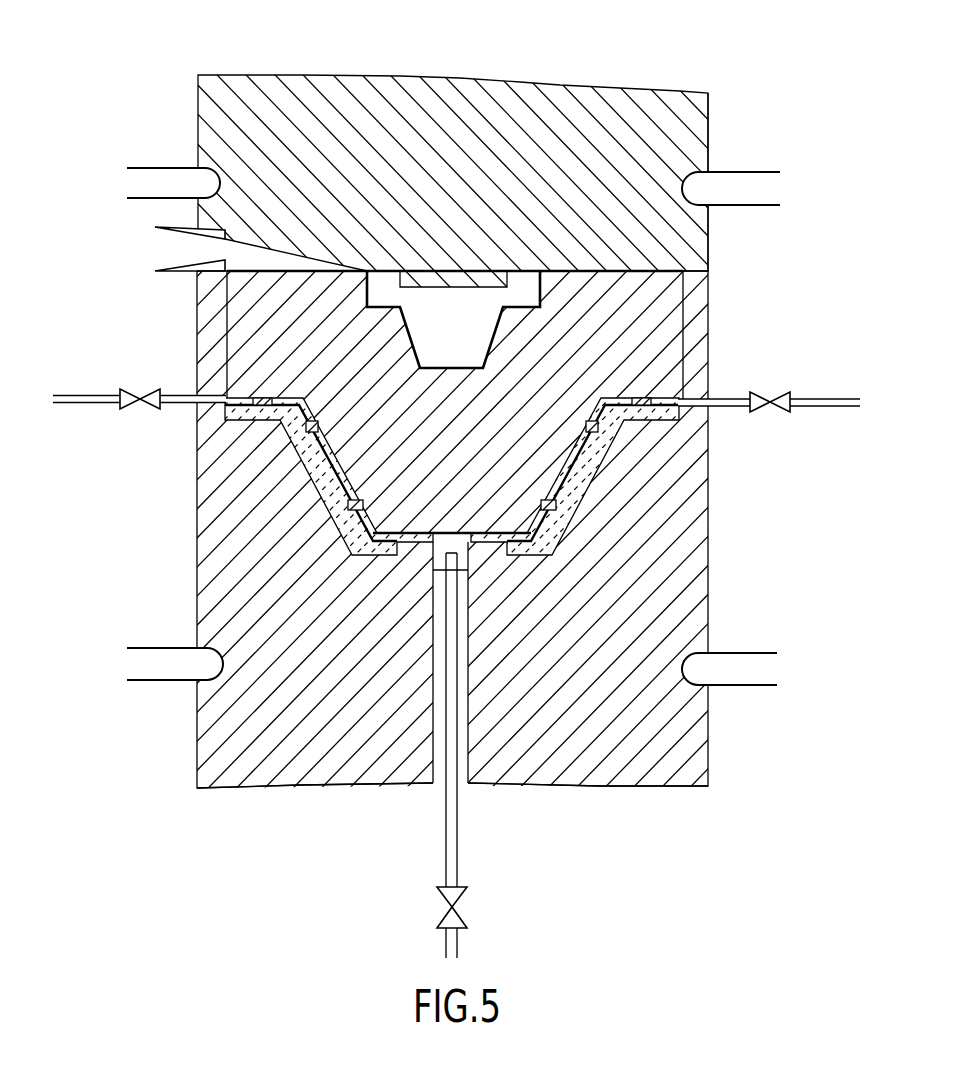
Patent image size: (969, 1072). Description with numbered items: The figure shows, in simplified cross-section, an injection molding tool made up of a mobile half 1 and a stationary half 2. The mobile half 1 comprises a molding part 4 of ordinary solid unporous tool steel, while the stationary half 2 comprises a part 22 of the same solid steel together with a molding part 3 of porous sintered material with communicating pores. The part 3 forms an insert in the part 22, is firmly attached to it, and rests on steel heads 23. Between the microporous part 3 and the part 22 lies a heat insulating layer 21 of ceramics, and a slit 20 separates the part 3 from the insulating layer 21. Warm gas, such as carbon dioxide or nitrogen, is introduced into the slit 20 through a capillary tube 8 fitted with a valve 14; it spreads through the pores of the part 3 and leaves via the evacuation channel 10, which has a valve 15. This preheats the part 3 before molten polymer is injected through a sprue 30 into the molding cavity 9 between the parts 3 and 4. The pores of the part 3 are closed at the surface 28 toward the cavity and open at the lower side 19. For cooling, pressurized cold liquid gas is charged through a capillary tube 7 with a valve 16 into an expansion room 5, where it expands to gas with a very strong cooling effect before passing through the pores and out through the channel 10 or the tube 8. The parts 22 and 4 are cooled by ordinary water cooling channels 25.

The mobile half 1 is at (710, 96).
The stationary half 2 is at (710, 557).
The molding part 3 is at (657, 312).
The molding part 4 is at (553, 120).
The expansion room 5 is at (438, 553).
The capillary tube 7 is at (453, 827).
The capillary tube 8 is at (838, 410).
The molding cavity 9 is at (448, 325).
The evacuation channel 10 is at (88, 408).
The valve 14 is at (770, 400).
The valve 15 is at (140, 398).
The valve 16 is at (460, 907).
The lower side 19 is at (357, 527).
The slit 20 is at (323, 447).
The heat insulating layer 21 is at (597, 470).
The part 22 is at (668, 737).
The steel heads 23 is at (323, 503).
The water cooling channels 25 is at (155, 181).
The surface 28 is at (367, 290).
The sprue 30 is at (205, 247).